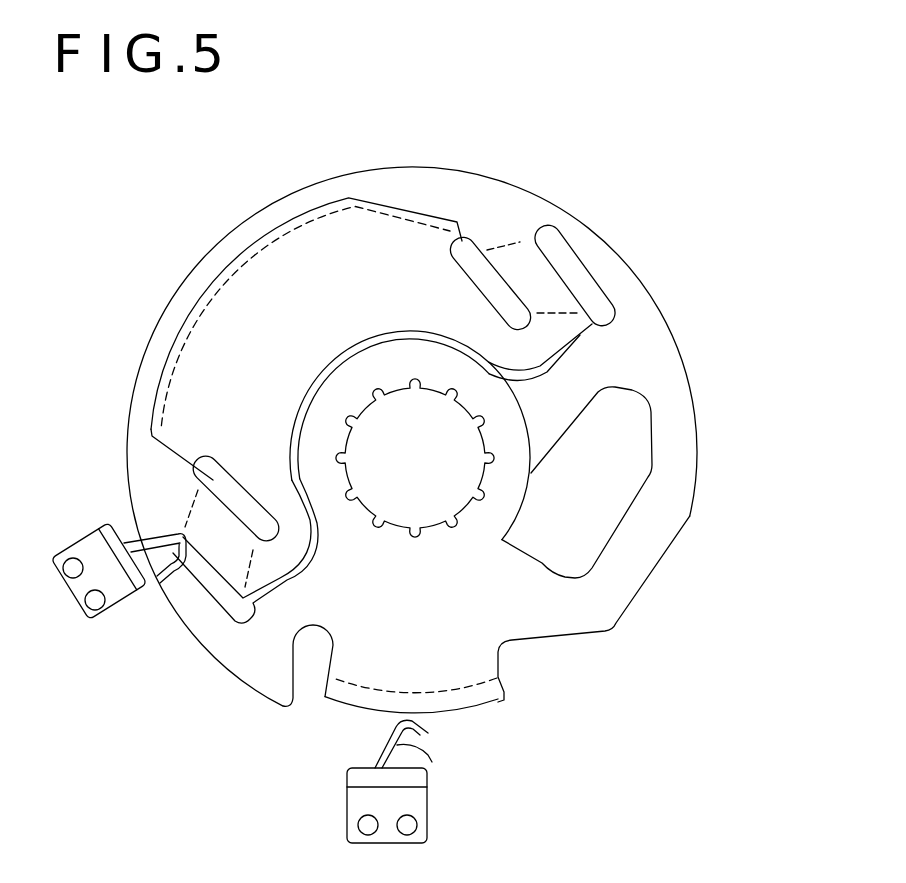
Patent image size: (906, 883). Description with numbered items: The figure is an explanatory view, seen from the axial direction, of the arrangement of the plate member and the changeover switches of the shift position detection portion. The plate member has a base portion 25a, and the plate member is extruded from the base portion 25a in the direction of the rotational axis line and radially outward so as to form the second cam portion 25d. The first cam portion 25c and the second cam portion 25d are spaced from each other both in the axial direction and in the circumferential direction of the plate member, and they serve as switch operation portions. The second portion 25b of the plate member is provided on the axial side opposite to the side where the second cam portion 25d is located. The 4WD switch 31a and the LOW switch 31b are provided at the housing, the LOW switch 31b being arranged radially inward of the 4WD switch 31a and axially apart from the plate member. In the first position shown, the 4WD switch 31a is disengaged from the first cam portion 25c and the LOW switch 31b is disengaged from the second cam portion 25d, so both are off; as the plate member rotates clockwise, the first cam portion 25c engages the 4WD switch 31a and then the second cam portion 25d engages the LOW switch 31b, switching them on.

The base portion 25a is at (507, 452).
The second portion 25b is at (495, 697).
The first cam portion 25c is at (689, 517).
The second cam portion 25d is at (351, 195).
The 4WD switch 31a is at (375, 753).
The LOW switch 31b is at (130, 523).